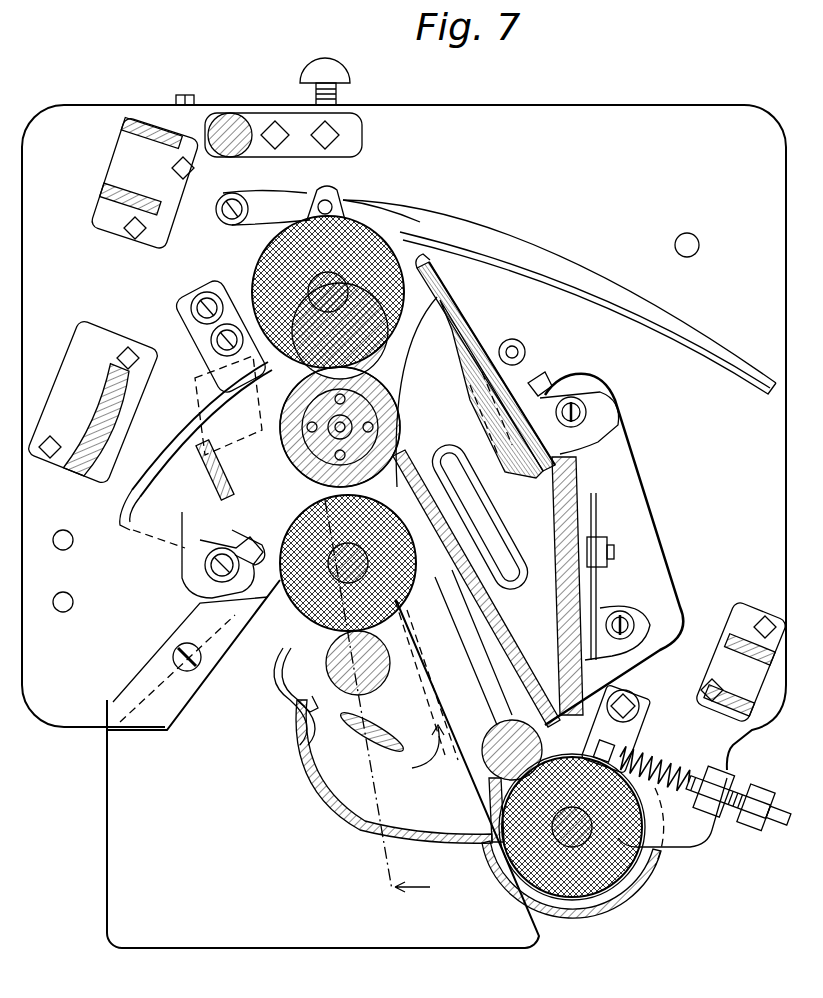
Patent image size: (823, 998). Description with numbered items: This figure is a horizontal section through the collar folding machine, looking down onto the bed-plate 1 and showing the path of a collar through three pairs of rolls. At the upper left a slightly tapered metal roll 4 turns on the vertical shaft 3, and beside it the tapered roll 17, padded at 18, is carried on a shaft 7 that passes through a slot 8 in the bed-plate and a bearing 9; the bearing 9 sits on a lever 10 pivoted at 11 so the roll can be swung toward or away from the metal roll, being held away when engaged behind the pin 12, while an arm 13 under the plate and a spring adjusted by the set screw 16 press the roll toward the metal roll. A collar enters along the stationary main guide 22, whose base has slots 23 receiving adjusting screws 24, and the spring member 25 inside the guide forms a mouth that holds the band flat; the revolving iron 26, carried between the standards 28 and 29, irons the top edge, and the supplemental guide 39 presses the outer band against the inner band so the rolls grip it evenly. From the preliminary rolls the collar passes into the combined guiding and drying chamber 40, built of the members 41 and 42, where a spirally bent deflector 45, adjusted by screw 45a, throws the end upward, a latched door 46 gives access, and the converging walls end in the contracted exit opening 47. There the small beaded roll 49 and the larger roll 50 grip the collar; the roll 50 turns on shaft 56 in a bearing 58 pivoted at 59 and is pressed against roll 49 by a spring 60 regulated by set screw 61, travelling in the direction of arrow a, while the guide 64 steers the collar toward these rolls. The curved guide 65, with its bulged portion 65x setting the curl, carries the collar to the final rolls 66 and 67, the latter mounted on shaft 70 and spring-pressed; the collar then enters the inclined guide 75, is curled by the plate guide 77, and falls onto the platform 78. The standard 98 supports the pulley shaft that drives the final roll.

The bed-plate 1 is at (404, 432).
The vertical shaft 3 is at (345, 563).
The metal roll 4 is at (318, 446).
The shaft 7 is at (382, 240).
The slot 8 is at (452, 238).
The bearing 9 is at (338, 200).
The lever 10 is at (527, 258).
The pivot 11 is at (232, 222).
The pin 12 is at (697, 245).
The arm 13 is at (369, 698).
The set screw 16 is at (336, 96).
The tapered roll 17 is at (400, 336).
The padding 18 is at (258, 270).
The main guide 22 is at (203, 574).
The slots 23 is at (262, 622).
The adjusting screws 24 is at (218, 450).
The spring member 25 is at (240, 532).
The revolving iron 26 is at (138, 548).
The standard 28 is at (726, 668).
The standard 29 is at (105, 393).
The supplemental guide 39 is at (116, 522).
The combined guiding and drying chamber 40 is at (549, 489).
The member 41 is at (500, 636).
The member 42 is at (540, 376).
The deflector 45 is at (518, 492).
The screw 45a is at (552, 392).
The door 46 is at (598, 597).
The exit opening 47 is at (512, 682).
The roll 49 is at (488, 770).
The roll 50 is at (585, 895).
The shaft 56 is at (640, 902).
The bearing 58 is at (634, 737).
The pivot 59 is at (640, 712).
The spring 60 is at (700, 765).
The set screw 61 is at (745, 822).
The guide 64 is at (588, 748).
The curved guide 65 is at (370, 816).
The bulged portion 65x is at (297, 720).
The roll 66 is at (388, 698).
The roll 67 is at (403, 470).
The shaft 70 is at (283, 653).
The inclined guide 75 is at (366, 741).
The plate guide 77 is at (430, 746).
The platform 78 is at (262, 940).
The standard 98 is at (140, 116).
The arrow a is at (655, 882).